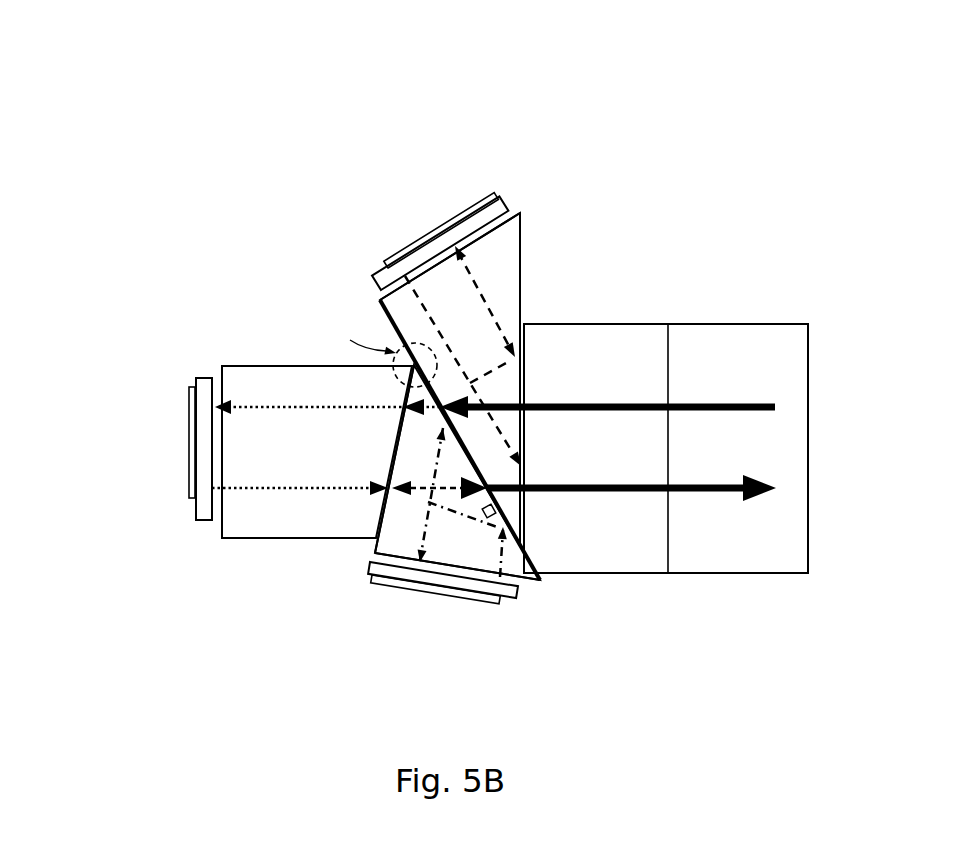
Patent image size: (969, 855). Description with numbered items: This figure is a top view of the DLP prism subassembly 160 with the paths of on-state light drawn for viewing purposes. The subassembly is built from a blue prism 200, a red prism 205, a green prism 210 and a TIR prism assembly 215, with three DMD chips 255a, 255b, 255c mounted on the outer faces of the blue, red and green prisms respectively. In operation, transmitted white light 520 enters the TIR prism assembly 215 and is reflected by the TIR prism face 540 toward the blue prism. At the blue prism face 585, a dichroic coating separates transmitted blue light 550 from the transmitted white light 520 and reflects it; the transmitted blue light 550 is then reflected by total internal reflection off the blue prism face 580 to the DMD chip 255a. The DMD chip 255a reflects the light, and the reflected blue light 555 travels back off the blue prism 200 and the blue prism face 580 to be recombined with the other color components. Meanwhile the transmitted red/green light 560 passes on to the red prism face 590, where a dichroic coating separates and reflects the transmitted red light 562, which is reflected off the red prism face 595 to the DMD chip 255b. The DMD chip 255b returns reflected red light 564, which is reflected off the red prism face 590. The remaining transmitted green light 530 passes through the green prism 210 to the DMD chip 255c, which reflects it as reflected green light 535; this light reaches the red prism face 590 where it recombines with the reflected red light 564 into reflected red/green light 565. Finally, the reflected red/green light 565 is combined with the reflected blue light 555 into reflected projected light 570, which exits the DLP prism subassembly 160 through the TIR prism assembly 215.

The DLP prism subassembly 160 is at (186, 72).
The blue prism 200 is at (520, 214).
The blue prism face 580 is at (520, 245).
The blue prism face 585 is at (380, 300).
The DMD chip 255a is at (460, 212).
The green prism 210 is at (317, 452).
The DMD chip 255c is at (190, 463).
The red prism 205 is at (393, 550).
The red prism face 590 is at (385, 500).
The red prism face 595 is at (540, 580).
The DMD chip 255b is at (457, 593).
The TIR prism assembly 215 is at (666, 448).
The TIR prism face 540 is at (668, 345).
The transmitted white light 520 is at (712, 402).
The reflected projected light 570 is at (695, 493).
The transmitted green light 530 is at (252, 407).
The transmitted red/green light 560 is at (410, 400).
The reflected green light 535 is at (242, 489).
The reflected red/green light 565 is at (413, 492).
The reflected blue light 555 is at (413, 254).
The transmitted blue light 550 is at (493, 312).
The transmitted red light 562 is at (388, 578).
The reflected red light 564 is at (503, 583).